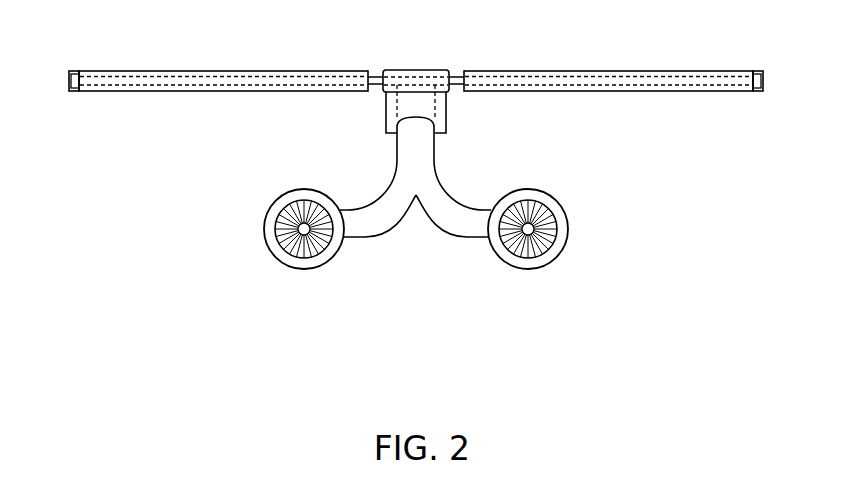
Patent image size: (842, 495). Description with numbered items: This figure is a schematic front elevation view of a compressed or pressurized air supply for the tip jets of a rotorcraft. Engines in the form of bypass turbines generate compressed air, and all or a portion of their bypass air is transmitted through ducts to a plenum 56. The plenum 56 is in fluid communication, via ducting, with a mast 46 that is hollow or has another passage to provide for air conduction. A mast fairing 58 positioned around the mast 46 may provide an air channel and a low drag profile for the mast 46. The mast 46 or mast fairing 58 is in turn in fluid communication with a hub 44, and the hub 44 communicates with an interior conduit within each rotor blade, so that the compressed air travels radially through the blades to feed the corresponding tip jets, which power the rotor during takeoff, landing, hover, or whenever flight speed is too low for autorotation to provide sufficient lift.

The hub 44 is at (416, 71).
The mast 46 is at (437, 109).
The plenum 56 is at (427, 147).
The mast fairing 58 is at (386, 112).